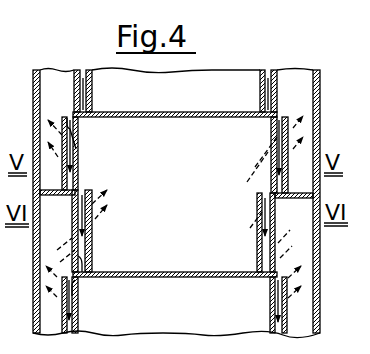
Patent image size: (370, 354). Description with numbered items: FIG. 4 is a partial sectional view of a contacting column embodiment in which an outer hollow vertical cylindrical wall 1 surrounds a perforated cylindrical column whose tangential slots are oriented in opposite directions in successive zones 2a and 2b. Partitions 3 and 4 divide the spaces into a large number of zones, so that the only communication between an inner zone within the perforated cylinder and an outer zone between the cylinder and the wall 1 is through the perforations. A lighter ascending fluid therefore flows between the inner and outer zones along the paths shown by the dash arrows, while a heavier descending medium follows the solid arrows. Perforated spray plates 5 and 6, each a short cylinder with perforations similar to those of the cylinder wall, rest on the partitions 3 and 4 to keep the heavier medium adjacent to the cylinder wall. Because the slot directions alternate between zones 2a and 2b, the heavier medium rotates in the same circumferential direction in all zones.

The hollow vertical cylindrical wall 1 is at (40, 88).
The zone 2a is at (76, 141).
The zone 2b is at (76, 254).
The partition 3 is at (170, 118).
The partition 4 is at (53, 196).
The perforated spray plate 5 is at (62, 170).
The perforated spray plate 6 is at (92, 88).